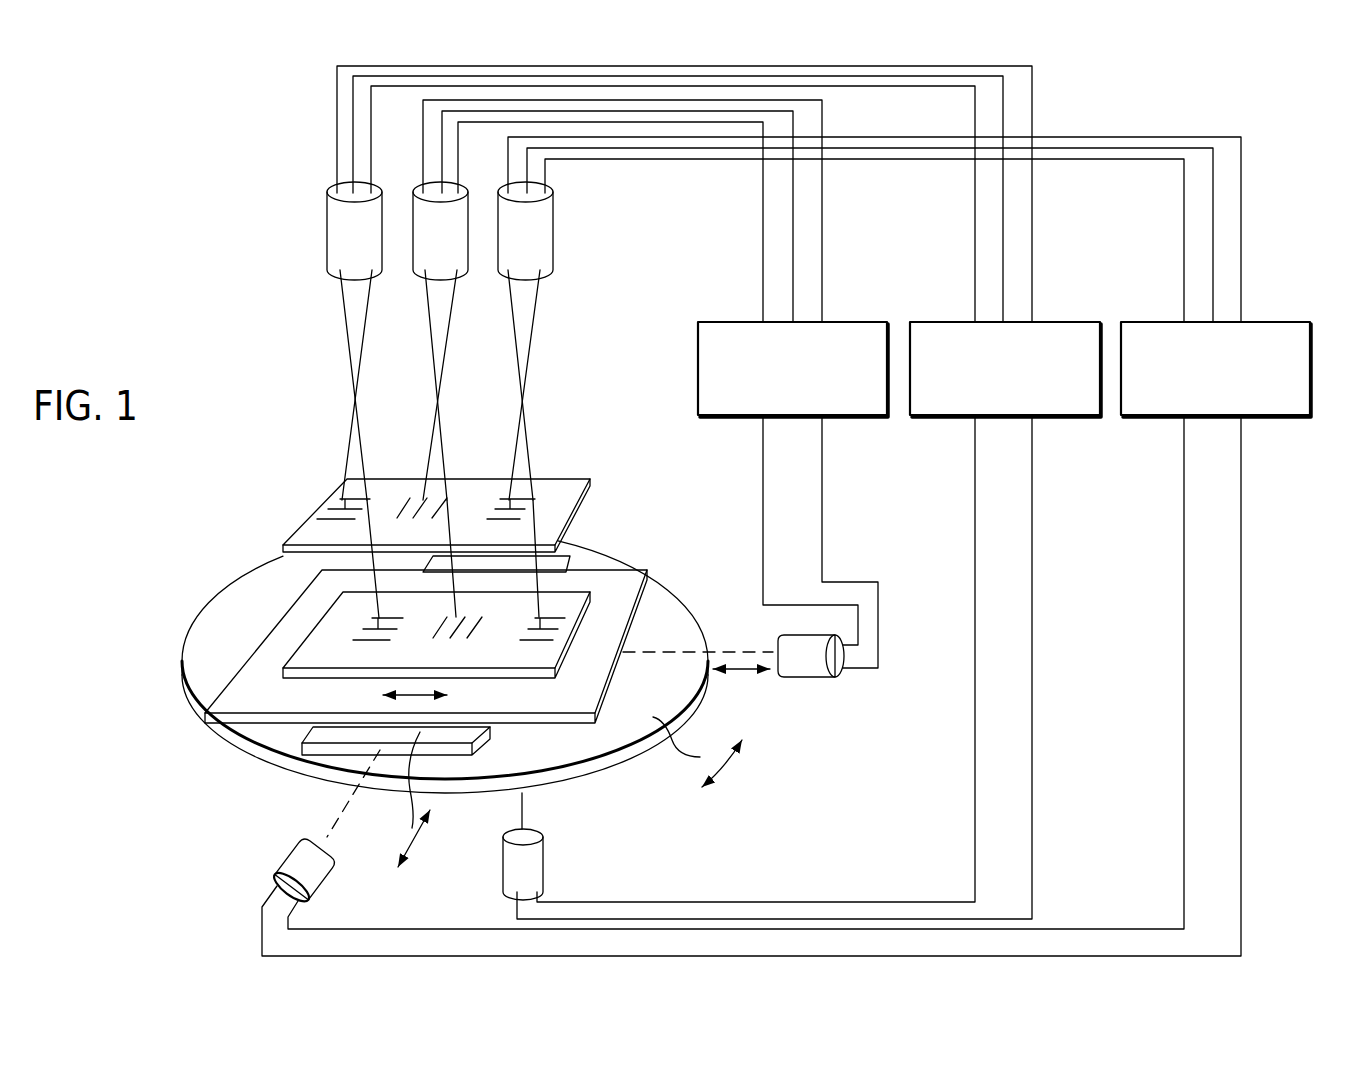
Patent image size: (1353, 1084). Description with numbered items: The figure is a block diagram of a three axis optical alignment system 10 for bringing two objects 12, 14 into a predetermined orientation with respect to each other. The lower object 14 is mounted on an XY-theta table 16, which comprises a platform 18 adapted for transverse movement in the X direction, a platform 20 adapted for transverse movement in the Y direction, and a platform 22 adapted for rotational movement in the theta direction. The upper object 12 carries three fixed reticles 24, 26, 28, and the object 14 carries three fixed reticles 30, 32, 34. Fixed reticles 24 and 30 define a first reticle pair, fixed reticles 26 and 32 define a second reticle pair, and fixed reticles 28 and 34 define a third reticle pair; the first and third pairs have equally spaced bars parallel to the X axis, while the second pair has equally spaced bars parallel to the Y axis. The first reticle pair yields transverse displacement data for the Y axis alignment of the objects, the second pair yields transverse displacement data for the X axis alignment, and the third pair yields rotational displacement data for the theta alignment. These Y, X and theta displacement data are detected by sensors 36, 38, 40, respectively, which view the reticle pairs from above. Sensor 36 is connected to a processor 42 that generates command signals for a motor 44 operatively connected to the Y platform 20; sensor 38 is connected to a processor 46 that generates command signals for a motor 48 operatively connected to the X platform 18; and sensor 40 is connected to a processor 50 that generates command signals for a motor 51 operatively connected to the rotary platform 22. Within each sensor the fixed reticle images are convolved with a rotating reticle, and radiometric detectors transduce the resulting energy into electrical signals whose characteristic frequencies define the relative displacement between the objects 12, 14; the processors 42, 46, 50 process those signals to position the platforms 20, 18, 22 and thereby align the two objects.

The three axis optical alignment system 10 is at (240, 318).
The object 12 is at (415, 497).
The object 14 is at (471, 608).
The XY-theta table 16 is at (168, 748).
The platform 18 is at (240, 665).
The platform 20 is at (310, 730).
The platform 22 is at (598, 768).
The fixed reticle 24 is at (508, 498).
The fixed reticle 26 is at (398, 498).
The fixed reticle 28 is at (323, 520).
The fixed reticle 30 is at (545, 640).
The fixed reticle 32 is at (482, 638).
The fixed reticle 34 is at (375, 640).
The sensor 36 is at (500, 264).
The sensor 38 is at (415, 264).
The sensor 40 is at (329, 263).
The processor 42 is at (870, 321).
The motor 44 is at (806, 678).
The processor 46 is at (1265, 321).
The motor 48 is at (280, 866).
The processor 50 is at (1068, 321).
The motor 51 is at (546, 868).